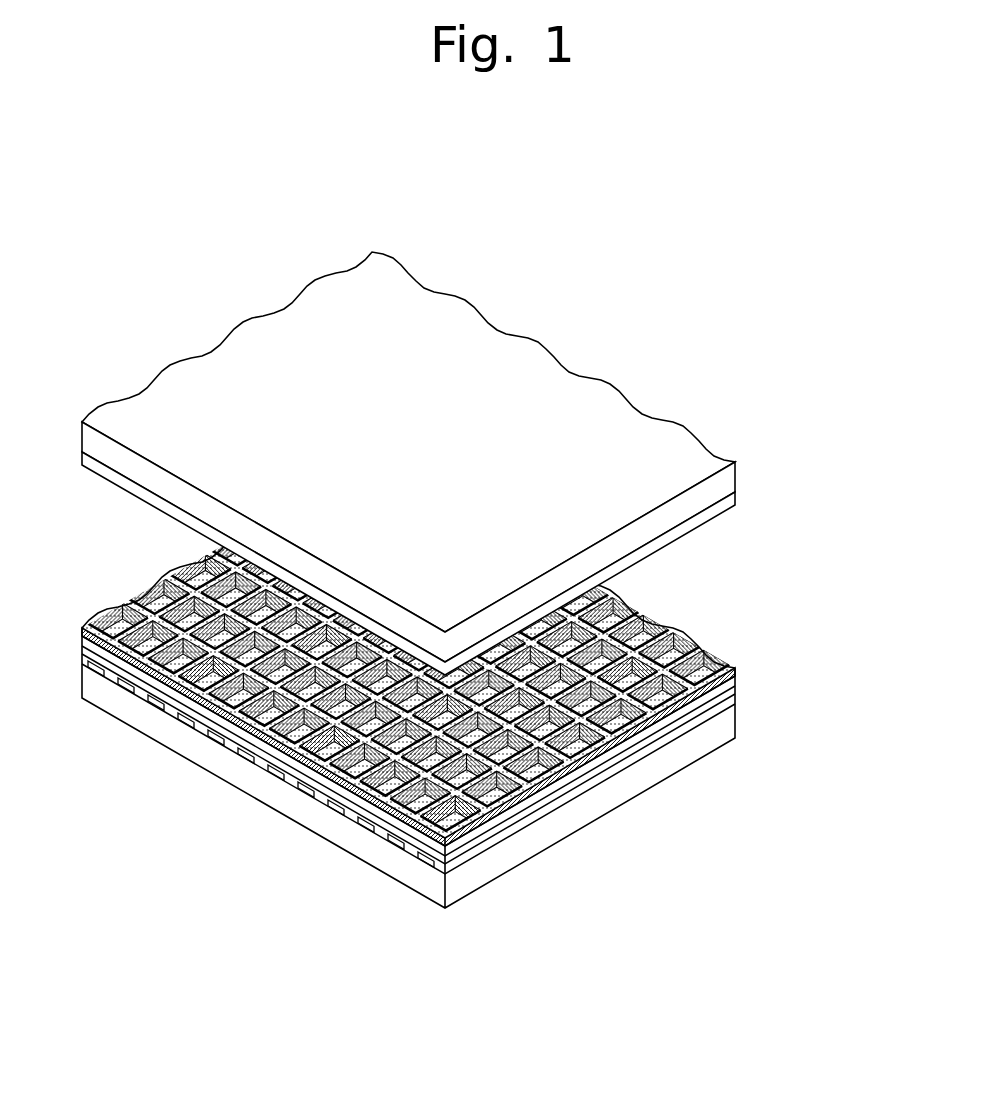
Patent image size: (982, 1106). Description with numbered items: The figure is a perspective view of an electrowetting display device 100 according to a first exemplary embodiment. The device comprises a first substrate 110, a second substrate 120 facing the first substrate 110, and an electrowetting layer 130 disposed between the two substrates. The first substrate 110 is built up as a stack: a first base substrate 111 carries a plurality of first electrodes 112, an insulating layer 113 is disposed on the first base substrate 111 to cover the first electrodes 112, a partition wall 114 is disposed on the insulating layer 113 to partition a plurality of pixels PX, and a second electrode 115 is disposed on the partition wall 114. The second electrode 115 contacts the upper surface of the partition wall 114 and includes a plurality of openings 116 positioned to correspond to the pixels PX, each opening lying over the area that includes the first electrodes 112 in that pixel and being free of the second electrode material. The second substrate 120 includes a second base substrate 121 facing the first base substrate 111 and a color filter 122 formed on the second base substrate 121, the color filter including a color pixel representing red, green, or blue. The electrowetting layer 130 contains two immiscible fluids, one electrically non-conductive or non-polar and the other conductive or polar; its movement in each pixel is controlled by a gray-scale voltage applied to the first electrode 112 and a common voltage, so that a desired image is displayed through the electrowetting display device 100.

The electrowetting display device 100 is at (713, 222).
The first substrate 110 is at (820, 660).
The first base substrate 111 is at (703, 743).
The first electrodes 112 is at (420, 852).
The insulating layer 113 is at (728, 716).
The partition wall 114 is at (733, 692).
The second electrode 115 is at (733, 679).
The openings 116 is at (447, 652).
The second substrate 120 is at (479, 463).
The second base substrate 121 is at (725, 485).
The color filter 122 is at (725, 507).
The electrowetting layer 130 is at (694, 602).
The pixels PX is at (163, 603).